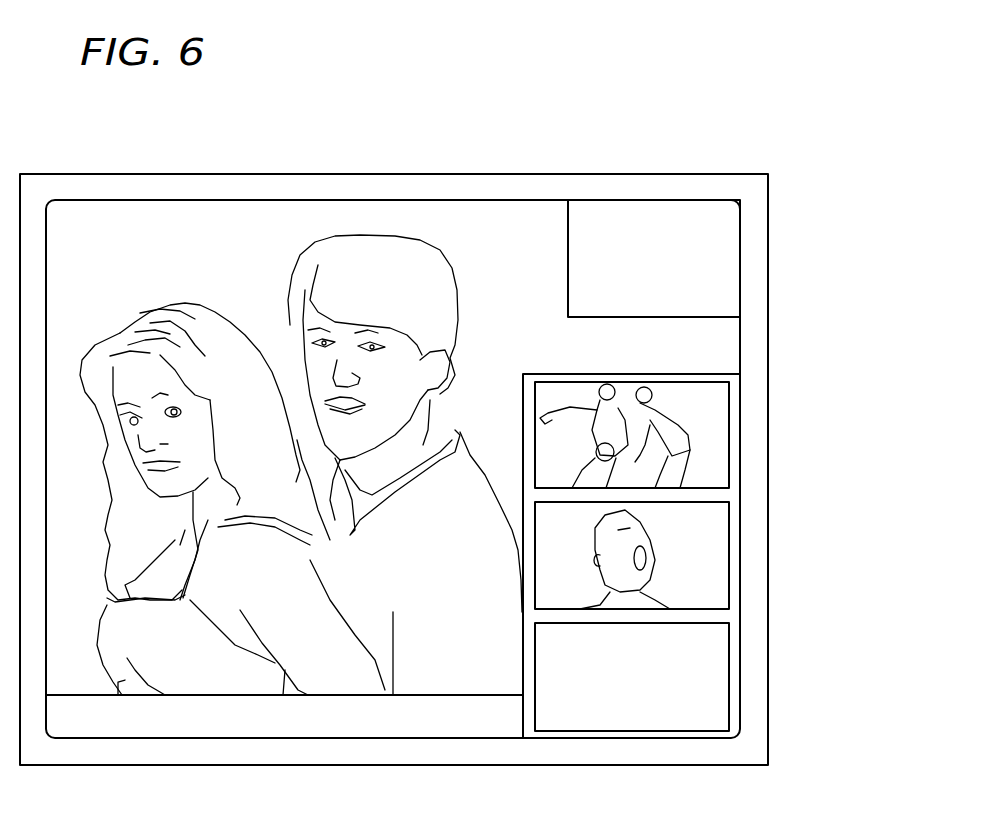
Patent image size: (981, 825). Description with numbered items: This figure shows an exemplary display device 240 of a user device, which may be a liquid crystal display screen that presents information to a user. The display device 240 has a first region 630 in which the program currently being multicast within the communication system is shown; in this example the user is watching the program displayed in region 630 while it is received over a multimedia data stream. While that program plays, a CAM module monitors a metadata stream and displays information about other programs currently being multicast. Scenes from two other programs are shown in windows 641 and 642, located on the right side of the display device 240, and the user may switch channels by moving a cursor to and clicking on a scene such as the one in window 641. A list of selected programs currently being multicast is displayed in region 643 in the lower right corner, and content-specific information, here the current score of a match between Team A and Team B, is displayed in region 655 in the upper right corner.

The display device 240 is at (426, 162).
The first region 630 is at (275, 235).
The region 655 is at (724, 258).
The window 641 is at (718, 441).
The window 642 is at (718, 557).
The region 643 is at (722, 673).